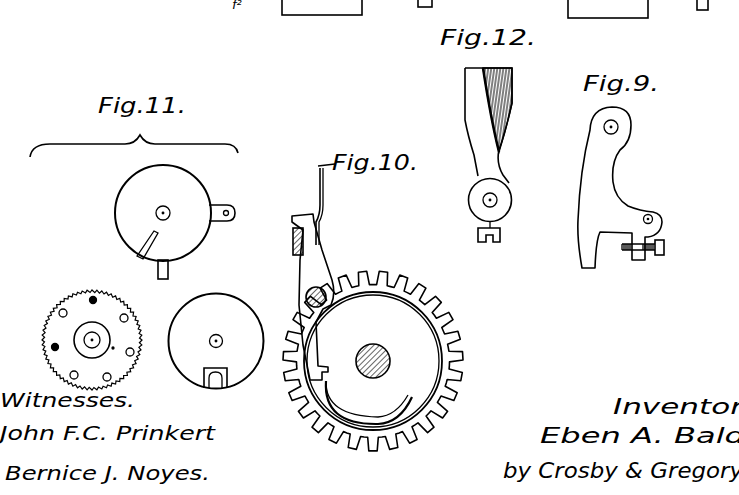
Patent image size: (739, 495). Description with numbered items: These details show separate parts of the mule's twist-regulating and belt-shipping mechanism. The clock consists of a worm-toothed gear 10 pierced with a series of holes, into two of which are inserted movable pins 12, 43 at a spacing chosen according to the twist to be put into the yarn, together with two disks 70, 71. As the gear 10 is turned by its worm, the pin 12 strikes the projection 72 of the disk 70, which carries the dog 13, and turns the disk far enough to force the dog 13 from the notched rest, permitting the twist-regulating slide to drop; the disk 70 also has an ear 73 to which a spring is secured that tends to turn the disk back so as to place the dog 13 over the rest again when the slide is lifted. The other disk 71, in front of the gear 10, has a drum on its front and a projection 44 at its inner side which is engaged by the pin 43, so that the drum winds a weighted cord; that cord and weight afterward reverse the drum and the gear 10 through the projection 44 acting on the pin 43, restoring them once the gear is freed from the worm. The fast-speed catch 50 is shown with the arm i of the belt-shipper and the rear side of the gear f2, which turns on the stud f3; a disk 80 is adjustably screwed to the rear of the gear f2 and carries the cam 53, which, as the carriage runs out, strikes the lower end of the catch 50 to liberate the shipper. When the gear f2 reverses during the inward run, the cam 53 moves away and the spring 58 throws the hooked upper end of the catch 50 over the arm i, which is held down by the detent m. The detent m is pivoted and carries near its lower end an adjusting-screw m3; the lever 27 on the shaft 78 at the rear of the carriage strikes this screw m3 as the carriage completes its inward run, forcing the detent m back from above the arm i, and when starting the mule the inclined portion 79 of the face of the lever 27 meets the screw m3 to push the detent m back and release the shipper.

In FIG. 11, the disk 70 is at (163, 213).
In FIG. 11, the ear 73 is at (228, 210).
In FIG. 11, the projection 72 is at (140, 250).
In FIG. 11, the dog 13 is at (174, 269).
In FIG. 11, the worm-toothed gear 10 is at (44, 335).
In FIG. 11, the movable pin 43 is at (93, 298).
In FIG. 11, the movable pin 12 is at (48, 352).
In FIG. 11, the disk 71 is at (230, 302).
In FIG. 11, the projection 44 is at (206, 383).
In FIG. 10, the disk 80 is at (400, 309).
In FIG. 10, the stud f3 is at (387, 352).
In FIG. 10, the gear f2 is at (455, 351).
In FIG. 10, the cam 53 is at (378, 420).
In FIG. 10, the fast-speed catch 50 is at (325, 262).
In FIG. 10, the arm i is at (292, 244).
In FIG. 10, the spring 58 is at (327, 203).
In FIG. 12, the lever 27 is at (474, 155).
In FIG. 12, the shaft 78 is at (483, 200).
In FIG. 12, the inclined portion 79 is at (507, 108).
In FIG. 9, the detent m is at (620, 187).
In FIG. 9, the adjusting-screw m3 is at (665, 247).